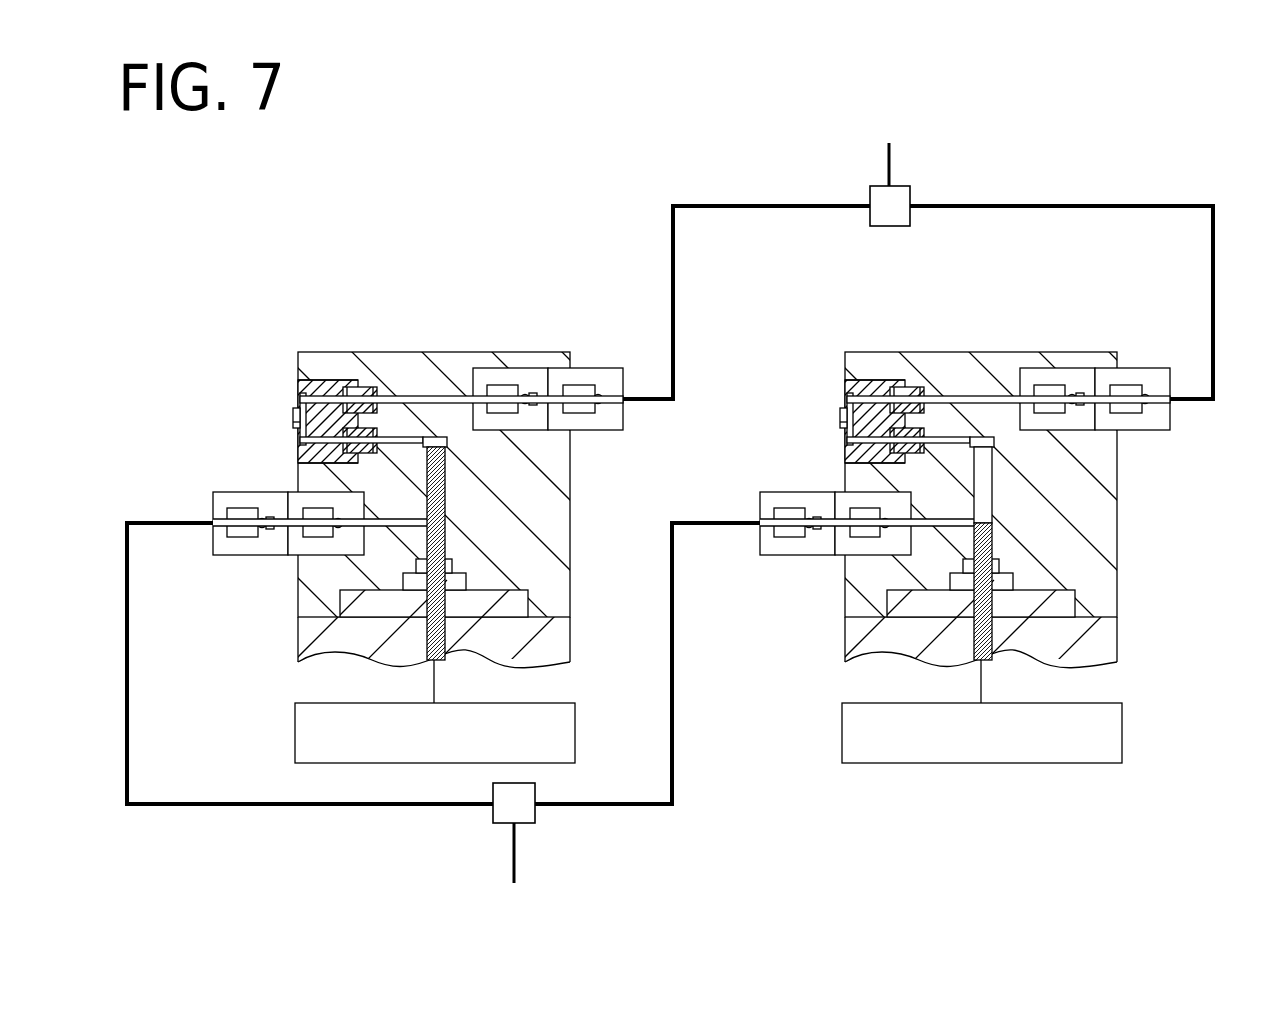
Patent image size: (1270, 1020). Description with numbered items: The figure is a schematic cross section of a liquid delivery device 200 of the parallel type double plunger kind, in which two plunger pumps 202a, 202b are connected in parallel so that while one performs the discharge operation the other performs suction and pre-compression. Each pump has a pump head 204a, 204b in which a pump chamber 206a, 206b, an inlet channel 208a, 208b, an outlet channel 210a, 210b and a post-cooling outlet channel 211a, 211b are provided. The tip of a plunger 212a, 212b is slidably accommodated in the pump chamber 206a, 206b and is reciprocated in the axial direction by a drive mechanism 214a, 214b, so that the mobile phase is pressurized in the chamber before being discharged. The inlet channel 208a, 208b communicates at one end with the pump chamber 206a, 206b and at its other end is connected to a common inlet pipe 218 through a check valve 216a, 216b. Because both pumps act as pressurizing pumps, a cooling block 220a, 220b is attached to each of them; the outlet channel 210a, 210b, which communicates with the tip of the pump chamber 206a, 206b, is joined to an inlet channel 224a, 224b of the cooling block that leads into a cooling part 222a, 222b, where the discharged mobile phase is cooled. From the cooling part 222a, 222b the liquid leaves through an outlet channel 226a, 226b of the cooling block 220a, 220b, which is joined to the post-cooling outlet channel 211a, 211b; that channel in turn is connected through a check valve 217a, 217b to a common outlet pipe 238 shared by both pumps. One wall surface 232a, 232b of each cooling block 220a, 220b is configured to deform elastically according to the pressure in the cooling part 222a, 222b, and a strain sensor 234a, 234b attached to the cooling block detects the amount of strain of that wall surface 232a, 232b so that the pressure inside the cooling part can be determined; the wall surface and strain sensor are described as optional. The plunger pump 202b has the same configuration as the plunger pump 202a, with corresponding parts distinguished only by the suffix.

The liquid delivery device 200 is at (772, 156).
The plunger pump 202a is at (459, 287).
The plunger pump 202b is at (1006, 287).
The pump head 204a is at (533, 367).
The pump head 204b is at (1080, 367).
The pump chamber 206a is at (447, 441).
The pump chamber 206b is at (982, 478).
The inlet channel 208a is at (393, 524).
The inlet channel 208b is at (940, 524).
The outlet channel 210a is at (395, 437).
The outlet channel 210b is at (942, 437).
The post-cooling outlet channel 211a is at (451, 396).
The post-cooling outlet channel 211b is at (998, 396).
The plunger 212a is at (435, 603).
The plunger 212b is at (982, 603).
The drive mechanism 214a is at (294, 720).
The drive mechanism 214b is at (841, 720).
The check valve 216a is at (225, 557).
The check valve 216b is at (772, 557).
The check valve 217a is at (598, 367).
The check valve 217b is at (1145, 367).
The inlet pipe 218 is at (516, 851).
The cooling block 220a is at (338, 386).
The cooling block 220b is at (885, 386).
The cooling part 222a is at (299, 396).
The cooling part 222b is at (846, 396).
The inlet channel 224a is at (305, 458).
The inlet channel 224b is at (852, 458).
The outlet channel 226a is at (323, 381).
The outlet channel 226b is at (870, 381).
The wall surface 232a is at (296, 432).
The wall surface 232b is at (843, 432).
The strain sensor 234a is at (293, 419).
The strain sensor 234b is at (840, 419).
The outlet pipe 238 is at (893, 162).